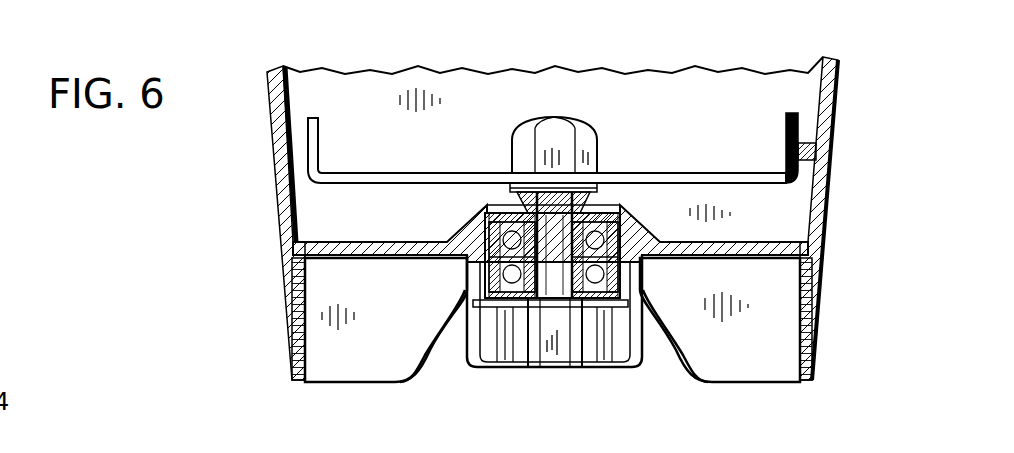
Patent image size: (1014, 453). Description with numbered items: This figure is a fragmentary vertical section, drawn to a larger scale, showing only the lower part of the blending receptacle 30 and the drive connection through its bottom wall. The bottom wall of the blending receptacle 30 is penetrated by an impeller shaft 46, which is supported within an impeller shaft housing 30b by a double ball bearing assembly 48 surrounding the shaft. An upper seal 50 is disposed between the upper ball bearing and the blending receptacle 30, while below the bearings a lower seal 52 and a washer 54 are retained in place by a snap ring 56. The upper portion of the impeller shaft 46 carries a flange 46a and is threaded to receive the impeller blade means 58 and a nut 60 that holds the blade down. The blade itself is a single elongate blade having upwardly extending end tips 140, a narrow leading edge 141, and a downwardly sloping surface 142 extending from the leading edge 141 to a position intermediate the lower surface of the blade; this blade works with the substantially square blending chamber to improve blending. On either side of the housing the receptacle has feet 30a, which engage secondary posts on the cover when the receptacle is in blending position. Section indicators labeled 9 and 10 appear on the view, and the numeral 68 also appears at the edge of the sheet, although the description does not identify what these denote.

The blending receptacle 30 is at (824, 188).
The feet 30a is at (290, 292).
The impeller shaft housing 30b is at (668, 258).
The impeller blade means 58 is at (365, 173).
The end tips 140 is at (310, 137).
The leading edge 141 is at (787, 123).
The downwardly sloping surface 142 is at (803, 160).
The nut 60 is at (563, 125).
The flange 46a is at (507, 185).
The upper seal 50 is at (493, 200).
The double ball bearing assembly 48 is at (640, 215).
The impeller shaft 46 is at (552, 315).
The washer 54 is at (510, 310).
The lower seal 52 is at (515, 367).
The snap ring 56 is at (600, 310).
The section line 10 is at (262, 78).
The section line 9 is at (760, 160).
The adjacent figure element 68 is at (18, 452).